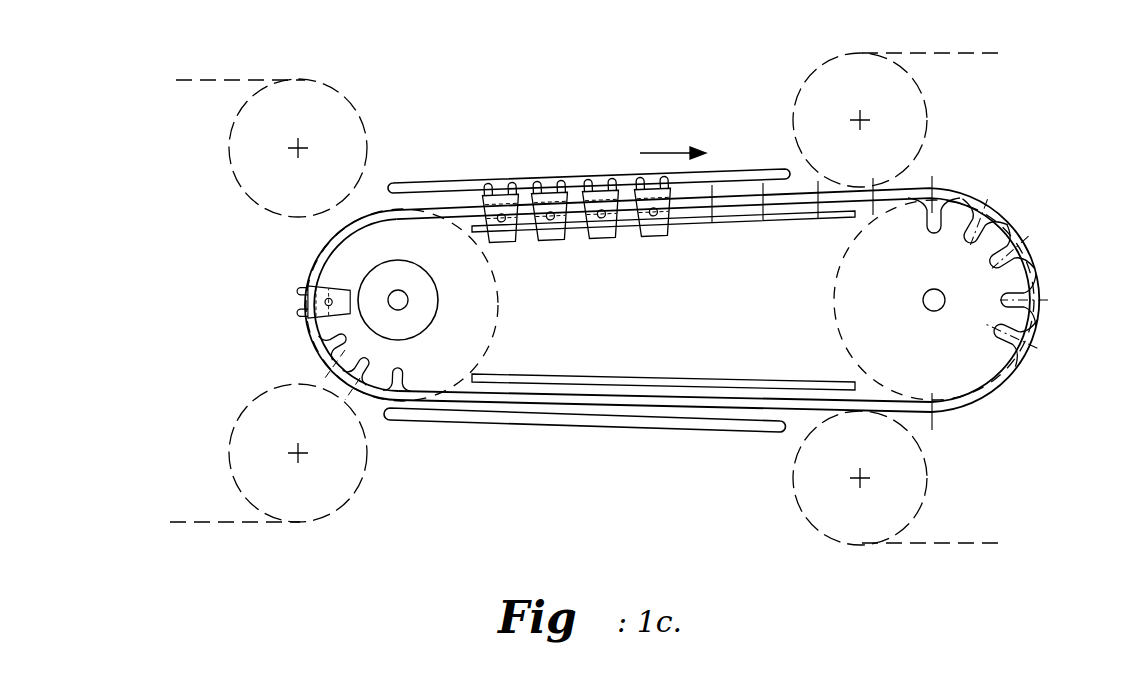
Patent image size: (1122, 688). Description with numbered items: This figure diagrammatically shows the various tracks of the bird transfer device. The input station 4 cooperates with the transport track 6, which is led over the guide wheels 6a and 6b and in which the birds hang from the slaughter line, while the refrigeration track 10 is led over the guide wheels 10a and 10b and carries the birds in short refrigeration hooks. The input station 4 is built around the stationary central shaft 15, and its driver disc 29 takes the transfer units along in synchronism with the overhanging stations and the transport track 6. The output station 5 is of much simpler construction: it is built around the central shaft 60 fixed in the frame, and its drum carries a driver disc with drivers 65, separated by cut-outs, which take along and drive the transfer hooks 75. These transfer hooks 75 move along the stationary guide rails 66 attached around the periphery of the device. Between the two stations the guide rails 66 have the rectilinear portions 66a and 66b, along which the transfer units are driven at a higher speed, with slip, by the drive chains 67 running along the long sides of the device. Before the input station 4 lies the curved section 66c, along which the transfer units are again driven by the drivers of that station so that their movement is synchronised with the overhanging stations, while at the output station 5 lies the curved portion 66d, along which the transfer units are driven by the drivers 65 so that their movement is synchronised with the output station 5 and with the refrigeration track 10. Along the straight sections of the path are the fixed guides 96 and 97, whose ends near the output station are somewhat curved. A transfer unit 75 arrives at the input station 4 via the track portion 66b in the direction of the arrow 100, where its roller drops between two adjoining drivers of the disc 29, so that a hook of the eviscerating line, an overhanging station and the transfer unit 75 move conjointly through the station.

The input station 4 is at (1012, 396).
The output station 5 is at (504, 330).
The transport track 6 is at (1000, 53).
The guide wheel 6a is at (917, 123).
The guide wheel 6b is at (878, 543).
The refrigeration track 10 is at (185, 80).
The guide wheel 10a is at (345, 117).
The guide wheel 10b is at (330, 497).
The stationary central shaft 15 is at (942, 307).
The driver disc 29 is at (1035, 320).
The central shaft 60 is at (410, 298).
The drivers 65 is at (330, 348).
The guide rails 66 is at (1044, 232).
The rectilinear portion 66a is at (688, 398).
The rectilinear portion 66b is at (735, 200).
The curved section 66c is at (1040, 277).
The curved portion 66d is at (333, 247).
The drive chains 67 is at (490, 292).
The transfer hooks 75 is at (584, 176).
The fixed guide 96 is at (556, 426).
The fixed guide 97 is at (730, 175).
The arrow 100 is at (660, 152).